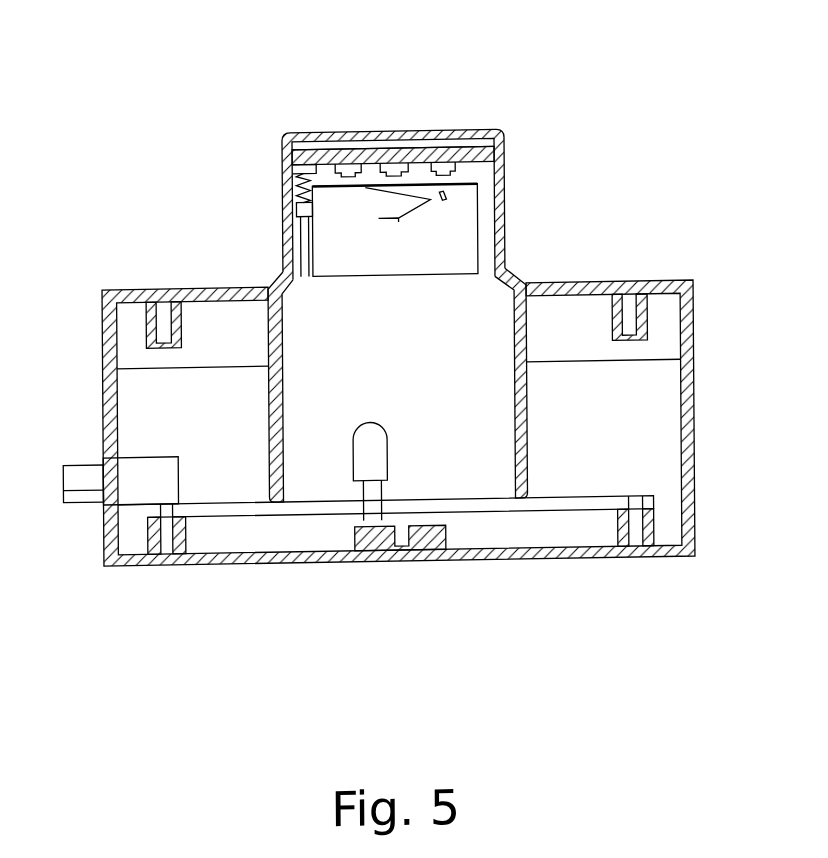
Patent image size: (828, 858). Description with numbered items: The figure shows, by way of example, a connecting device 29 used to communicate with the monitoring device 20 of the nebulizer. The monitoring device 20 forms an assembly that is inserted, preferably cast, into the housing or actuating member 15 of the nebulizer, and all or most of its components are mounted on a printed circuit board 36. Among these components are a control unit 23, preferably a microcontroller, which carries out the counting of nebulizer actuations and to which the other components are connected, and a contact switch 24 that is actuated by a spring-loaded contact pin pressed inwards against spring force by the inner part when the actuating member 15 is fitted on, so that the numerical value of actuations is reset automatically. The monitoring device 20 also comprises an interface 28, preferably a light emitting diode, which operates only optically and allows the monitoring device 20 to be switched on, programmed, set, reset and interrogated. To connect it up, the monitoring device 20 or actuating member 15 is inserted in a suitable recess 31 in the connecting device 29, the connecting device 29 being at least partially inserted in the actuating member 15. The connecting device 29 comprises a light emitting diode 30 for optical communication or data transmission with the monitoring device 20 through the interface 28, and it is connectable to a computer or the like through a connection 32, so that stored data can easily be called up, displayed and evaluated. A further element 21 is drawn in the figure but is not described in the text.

The actuating member 15 is at (479, 132).
The monitoring device 20 is at (298, 145).
The contact plate 21 is at (480, 151).
The control unit 23 is at (365, 139).
The contact switch 24 is at (292, 191).
The interface 28 is at (416, 160).
The connecting device 29 is at (657, 287).
The light emitting diode 30 is at (378, 443).
The recess 31 is at (522, 288).
The connection 32 is at (76, 452).
The printed circuit board 36 is at (404, 152).